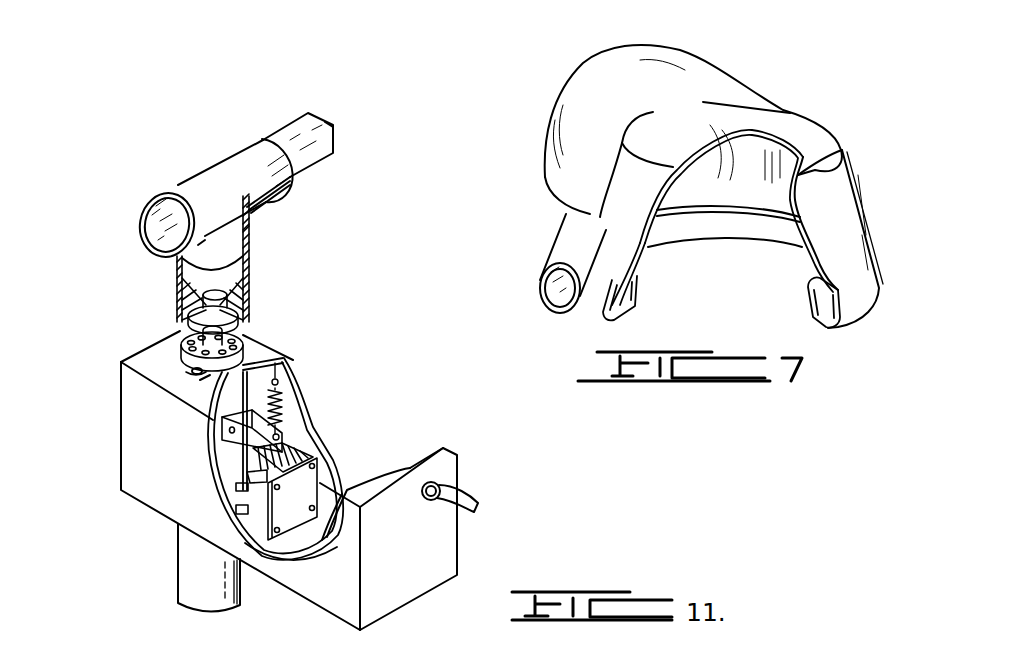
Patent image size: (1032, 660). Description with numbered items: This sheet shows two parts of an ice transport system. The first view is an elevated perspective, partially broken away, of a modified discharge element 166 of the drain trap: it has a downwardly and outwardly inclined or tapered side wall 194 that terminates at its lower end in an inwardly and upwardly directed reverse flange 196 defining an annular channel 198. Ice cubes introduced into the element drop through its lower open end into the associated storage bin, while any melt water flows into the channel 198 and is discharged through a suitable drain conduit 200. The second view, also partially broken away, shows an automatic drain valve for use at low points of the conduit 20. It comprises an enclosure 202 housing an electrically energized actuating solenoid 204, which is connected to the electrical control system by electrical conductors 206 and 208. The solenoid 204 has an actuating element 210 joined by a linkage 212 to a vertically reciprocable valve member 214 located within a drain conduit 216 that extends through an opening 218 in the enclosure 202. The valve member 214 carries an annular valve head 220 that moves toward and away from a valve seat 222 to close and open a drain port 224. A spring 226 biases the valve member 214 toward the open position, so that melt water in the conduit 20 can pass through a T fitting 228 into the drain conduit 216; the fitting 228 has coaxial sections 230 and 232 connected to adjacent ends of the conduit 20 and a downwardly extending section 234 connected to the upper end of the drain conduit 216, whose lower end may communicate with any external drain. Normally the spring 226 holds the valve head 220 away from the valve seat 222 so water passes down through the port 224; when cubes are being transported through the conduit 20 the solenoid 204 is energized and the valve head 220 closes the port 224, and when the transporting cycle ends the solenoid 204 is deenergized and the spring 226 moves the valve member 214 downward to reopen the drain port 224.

In FIG. 11, the conduit 20 is at (332, 128).
In FIG. 7, the discharge element 166 is at (765, 86).
In FIG. 7, the side wall 194 is at (607, 220).
In FIG. 7, the reverse flange 196 is at (637, 292).
In FIG. 7, the annular channel 198 is at (820, 300).
In FIG. 7, the drain conduit 200 is at (560, 318).
In FIG. 11, the enclosure 202 is at (412, 609).
In FIG. 11, the actuating solenoid 204 is at (325, 470).
In FIG. 11, the electrical conductor 206 is at (307, 567).
In FIG. 11, the electrical conductor 208 is at (357, 472).
In FIG. 11, the actuating element 210 is at (290, 437).
In FIG. 11, the linkage 212 is at (238, 440).
In FIG. 11, the valve member 214 is at (245, 333).
In FIG. 11, the drain conduit 216 is at (172, 283).
In FIG. 11, the opening 218 is at (198, 373).
In FIG. 11, the valve head 220 is at (248, 300).
In FIG. 11, the valve seat 222 is at (246, 290).
In FIG. 11, the drain port 224 is at (249, 270).
In FIG. 11, the spring 226 is at (290, 363).
In FIG. 11, the T fitting 228 is at (212, 161).
In FIG. 11, the coaxial section 230 is at (242, 150).
In FIG. 11, the coaxial section 232 is at (178, 185).
In FIG. 11, the downwardly extending section 234 is at (233, 236).